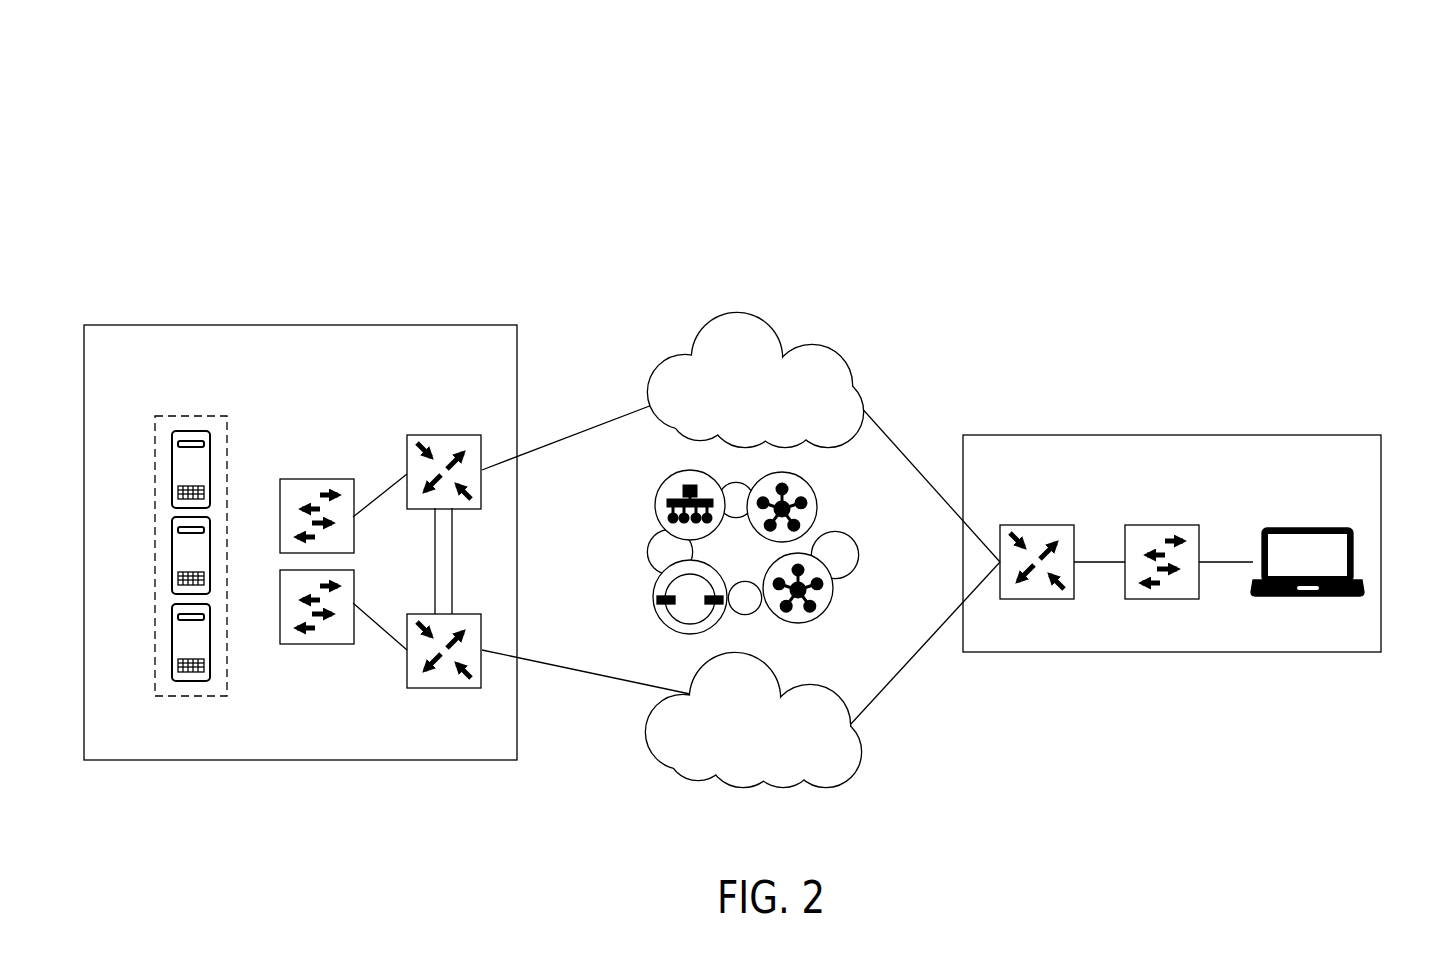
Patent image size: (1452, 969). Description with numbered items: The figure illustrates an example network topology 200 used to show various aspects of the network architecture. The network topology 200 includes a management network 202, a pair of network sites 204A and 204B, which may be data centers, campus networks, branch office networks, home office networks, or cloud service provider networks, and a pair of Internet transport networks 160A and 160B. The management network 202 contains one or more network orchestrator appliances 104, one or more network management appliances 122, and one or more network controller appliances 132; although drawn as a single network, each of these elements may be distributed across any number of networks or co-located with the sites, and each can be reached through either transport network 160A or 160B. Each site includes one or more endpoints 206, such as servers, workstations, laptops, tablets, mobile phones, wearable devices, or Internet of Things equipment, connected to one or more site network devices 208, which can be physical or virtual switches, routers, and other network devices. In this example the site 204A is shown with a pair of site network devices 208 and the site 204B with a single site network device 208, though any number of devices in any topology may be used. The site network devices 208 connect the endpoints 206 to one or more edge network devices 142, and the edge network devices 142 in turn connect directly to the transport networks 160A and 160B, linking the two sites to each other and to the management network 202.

The network topology 200 is at (1412, 195).
The network site 204A is at (376, 375).
The network site 204B is at (1248, 484).
The endpoints 206 is at (172, 467).
The site network devices 208 is at (297, 479).
The edge network devices 142 is at (445, 434).
The Internet transport network 160A is at (763, 430).
The Internet transport network 160B is at (758, 762).
The management network 202 is at (866, 553).
The network management appliance 122 is at (667, 478).
The network controller appliance 132 is at (802, 475).
The network orchestrator appliance 104 is at (663, 630).